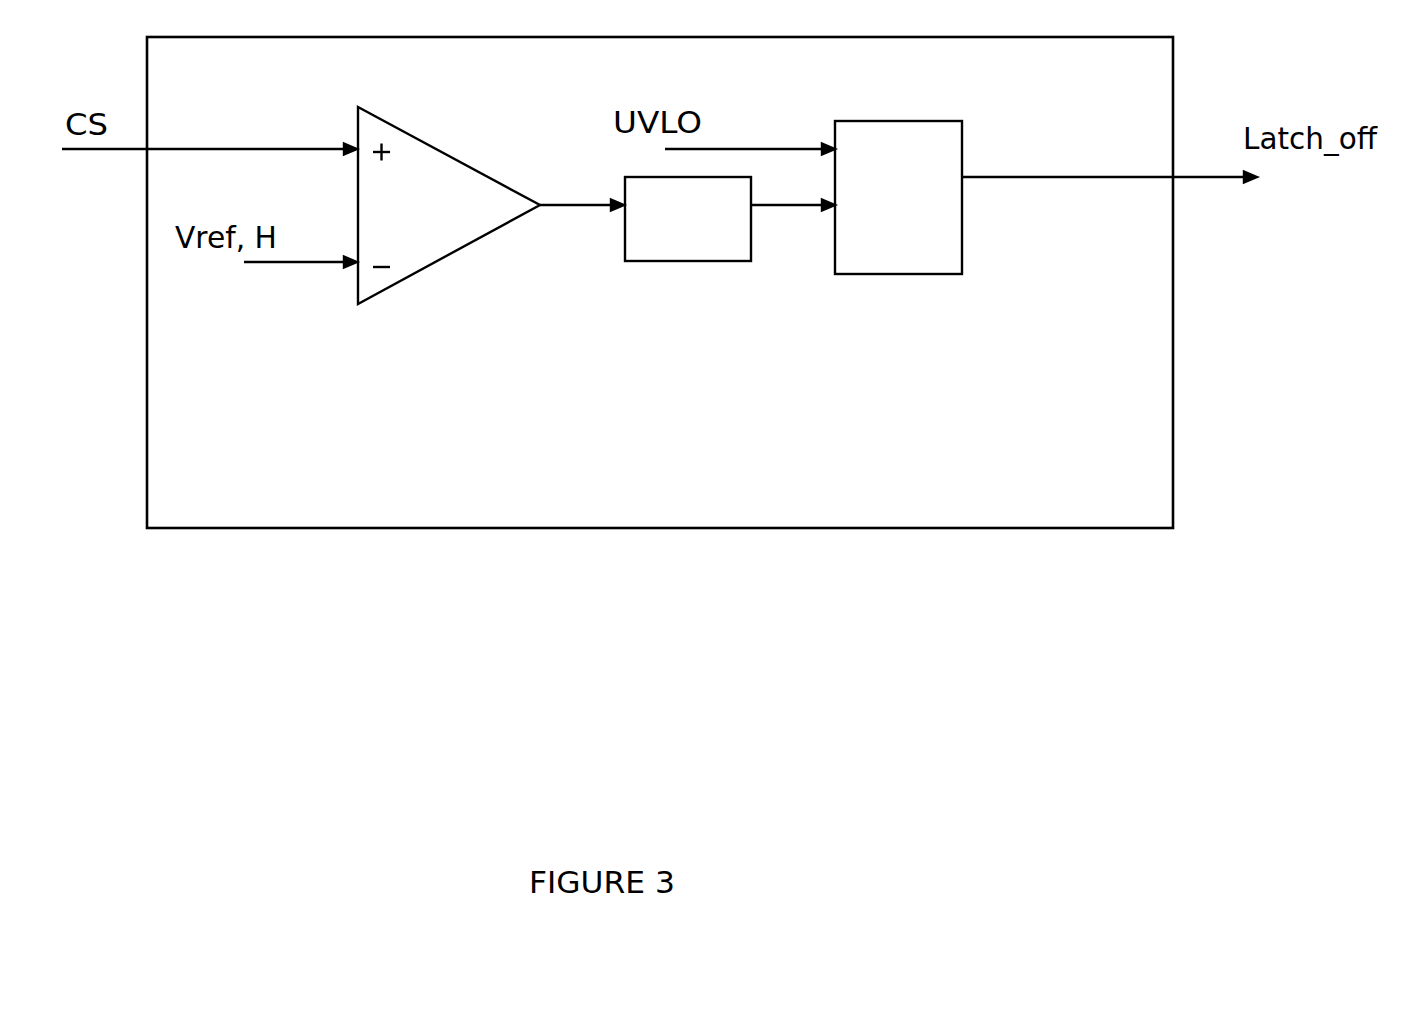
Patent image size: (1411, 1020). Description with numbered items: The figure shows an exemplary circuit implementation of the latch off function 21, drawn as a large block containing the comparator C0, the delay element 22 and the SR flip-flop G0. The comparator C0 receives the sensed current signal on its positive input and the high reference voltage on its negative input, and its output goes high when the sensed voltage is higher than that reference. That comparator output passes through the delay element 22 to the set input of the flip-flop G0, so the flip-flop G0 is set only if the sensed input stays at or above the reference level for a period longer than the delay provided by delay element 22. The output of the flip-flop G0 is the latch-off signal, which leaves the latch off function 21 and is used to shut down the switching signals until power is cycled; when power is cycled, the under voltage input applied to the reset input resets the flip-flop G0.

The latch off function 21 is at (282, 478).
The delay element 22 is at (652, 247).
The comparator C0 is at (449, 205).
The SR flip-flop G0 is at (898, 175).